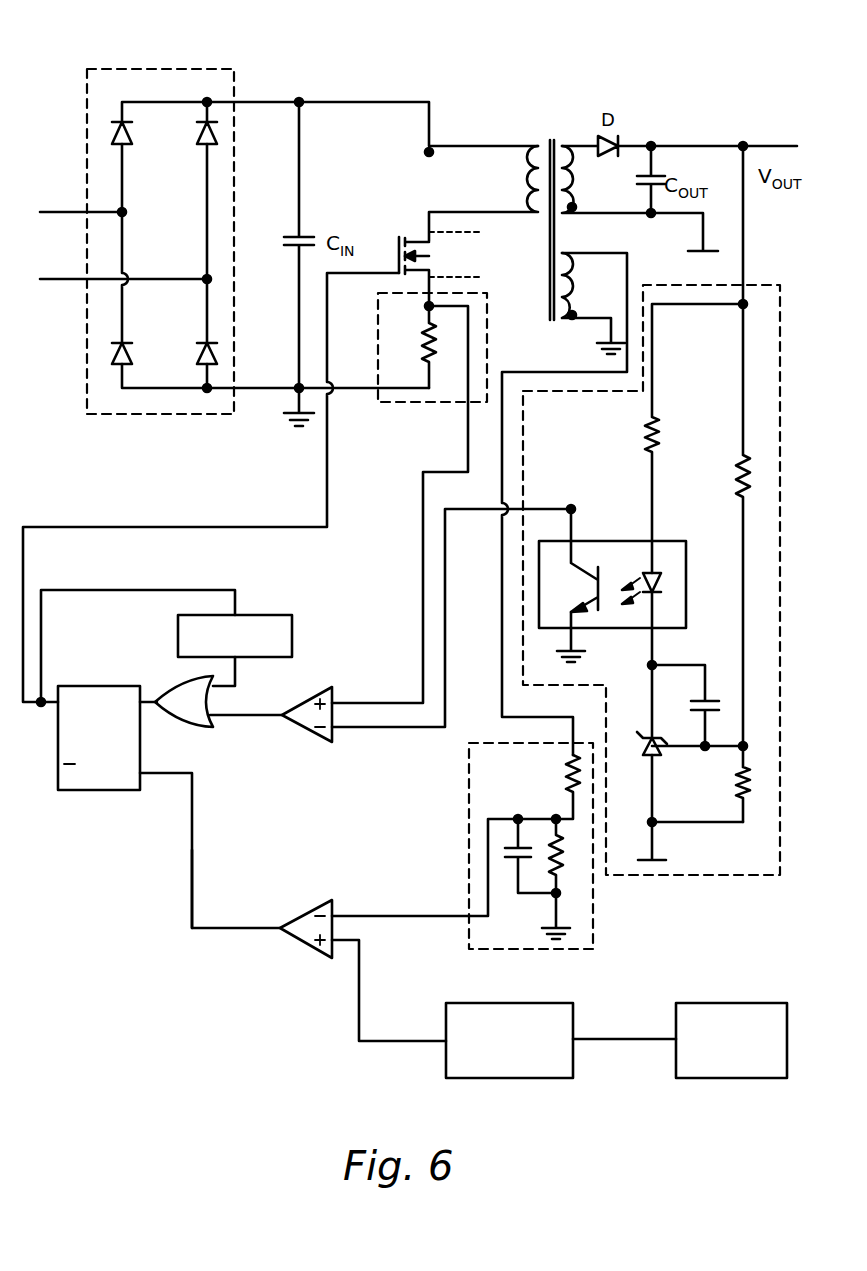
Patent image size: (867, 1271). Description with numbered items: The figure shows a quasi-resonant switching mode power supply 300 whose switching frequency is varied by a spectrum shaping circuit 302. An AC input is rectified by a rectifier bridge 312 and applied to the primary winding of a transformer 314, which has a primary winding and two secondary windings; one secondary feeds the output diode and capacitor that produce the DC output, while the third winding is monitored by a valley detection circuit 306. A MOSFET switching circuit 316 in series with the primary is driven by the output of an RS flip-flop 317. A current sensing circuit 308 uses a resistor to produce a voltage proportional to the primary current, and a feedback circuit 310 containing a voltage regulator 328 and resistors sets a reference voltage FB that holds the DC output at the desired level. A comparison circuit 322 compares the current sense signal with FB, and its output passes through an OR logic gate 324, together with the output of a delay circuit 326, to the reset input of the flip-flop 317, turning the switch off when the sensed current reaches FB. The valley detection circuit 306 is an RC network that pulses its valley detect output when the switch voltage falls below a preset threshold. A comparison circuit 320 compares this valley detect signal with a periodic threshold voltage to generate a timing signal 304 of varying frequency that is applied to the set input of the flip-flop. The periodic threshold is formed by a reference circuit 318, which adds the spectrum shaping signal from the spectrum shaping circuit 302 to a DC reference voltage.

The switching mode power supply 300 is at (657, 62).
The spectrum shaping circuit 302 is at (735, 1003).
The timing signal 304 is at (190, 884).
The valley detection circuit 306 is at (593, 925).
The current sensing circuit 308 is at (428, 402).
The feedback circuit 310 is at (697, 877).
The rectifier bridge 312 is at (162, 69).
The transformer 314 is at (566, 133).
The switching circuit 316 is at (405, 232).
The RS flip-flop 317 is at (107, 790).
The reference circuit 318 is at (516, 1003).
The comparison circuit 320 is at (306, 912).
The comparison circuit 322 is at (322, 743).
The logic gate 324 is at (198, 727).
The delay circuit 326 is at (270, 615).
The voltage regulator 328 is at (666, 541).